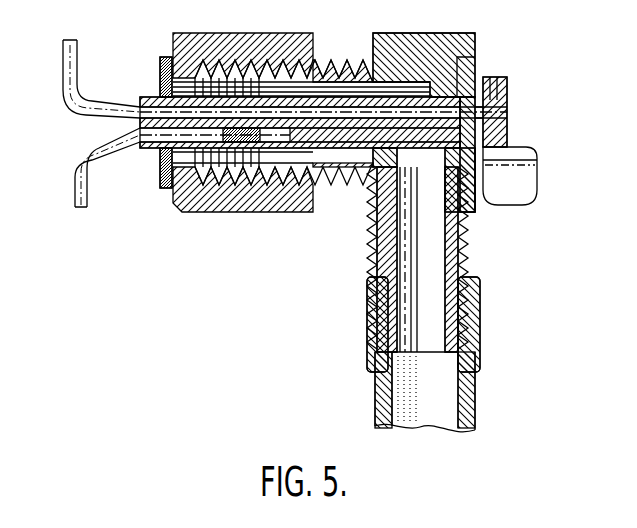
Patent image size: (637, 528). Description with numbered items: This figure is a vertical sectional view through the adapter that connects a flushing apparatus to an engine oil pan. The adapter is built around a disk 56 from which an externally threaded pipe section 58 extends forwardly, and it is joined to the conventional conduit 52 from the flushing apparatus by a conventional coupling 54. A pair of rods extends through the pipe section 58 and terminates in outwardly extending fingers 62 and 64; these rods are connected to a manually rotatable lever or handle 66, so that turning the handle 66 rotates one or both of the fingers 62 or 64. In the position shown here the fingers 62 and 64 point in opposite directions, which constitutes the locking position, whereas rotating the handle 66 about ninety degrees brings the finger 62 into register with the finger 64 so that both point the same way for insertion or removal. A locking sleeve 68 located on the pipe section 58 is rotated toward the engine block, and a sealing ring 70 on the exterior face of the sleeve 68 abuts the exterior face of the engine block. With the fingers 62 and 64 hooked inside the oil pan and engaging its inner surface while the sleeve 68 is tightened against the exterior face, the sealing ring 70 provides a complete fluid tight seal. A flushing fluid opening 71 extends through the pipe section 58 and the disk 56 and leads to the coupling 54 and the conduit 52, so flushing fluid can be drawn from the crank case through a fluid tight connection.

The conduit 52 is at (372, 390).
The coupling 54 is at (368, 305).
The disk 56 is at (439, 33).
The externally threaded pipe section 58 is at (338, 62).
The finger 62 is at (80, 53).
The finger 64 is at (88, 187).
The lever or handle 66 is at (537, 185).
The locking sleeve 68 is at (268, 14).
The sealing ring 70 is at (161, 182).
The flushing fluid opening 71 is at (158, 90).